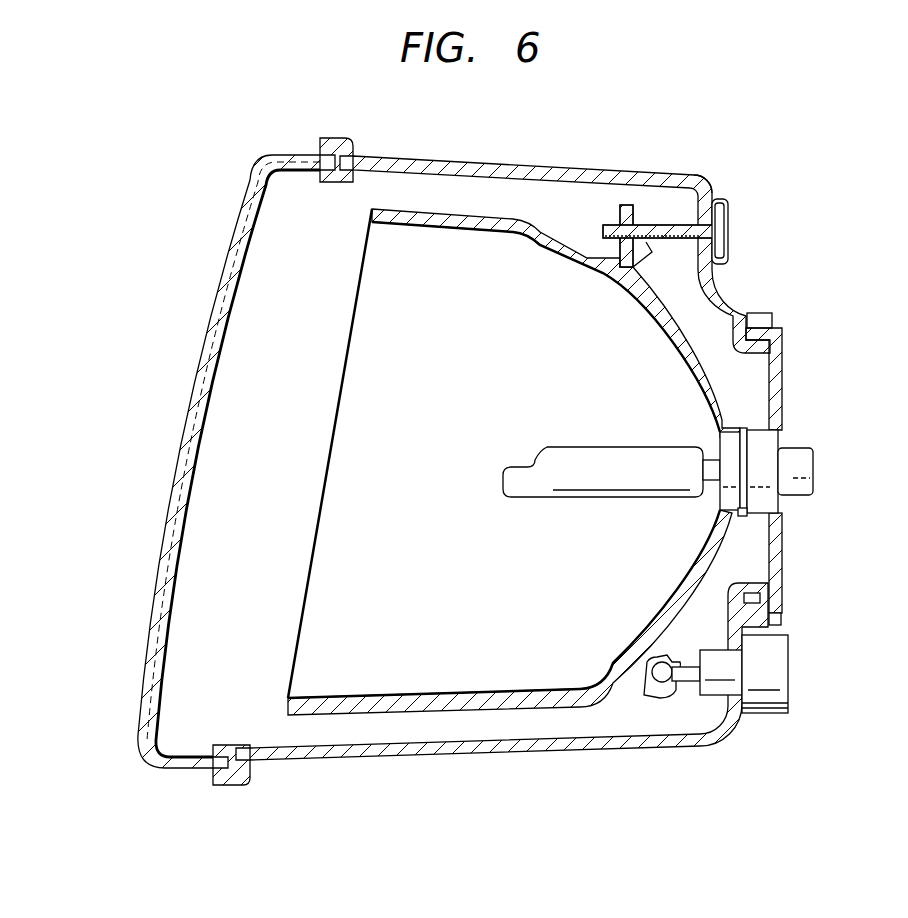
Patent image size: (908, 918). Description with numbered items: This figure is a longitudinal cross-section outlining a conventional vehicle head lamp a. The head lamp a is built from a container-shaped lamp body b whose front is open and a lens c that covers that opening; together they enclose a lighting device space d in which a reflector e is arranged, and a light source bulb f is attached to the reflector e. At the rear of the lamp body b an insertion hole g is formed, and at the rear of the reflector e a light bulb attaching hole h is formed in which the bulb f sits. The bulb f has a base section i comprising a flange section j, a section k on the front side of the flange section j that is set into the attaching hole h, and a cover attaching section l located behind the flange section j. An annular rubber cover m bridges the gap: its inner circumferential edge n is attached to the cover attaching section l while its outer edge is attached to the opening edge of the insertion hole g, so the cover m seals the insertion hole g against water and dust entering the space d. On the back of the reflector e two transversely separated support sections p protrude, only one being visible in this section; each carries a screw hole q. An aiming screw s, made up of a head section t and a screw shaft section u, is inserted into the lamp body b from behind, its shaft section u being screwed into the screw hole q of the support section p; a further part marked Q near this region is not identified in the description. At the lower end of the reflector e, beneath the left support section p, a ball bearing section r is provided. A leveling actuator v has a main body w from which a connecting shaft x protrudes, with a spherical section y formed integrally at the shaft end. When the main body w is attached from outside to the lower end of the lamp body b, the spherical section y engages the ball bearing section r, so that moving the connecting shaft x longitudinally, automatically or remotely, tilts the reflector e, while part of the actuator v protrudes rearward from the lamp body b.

The head lamp a is at (706, 139).
The lamp body b is at (535, 163).
The lens c is at (195, 375).
The lighting device space d is at (271, 446).
The reflector e is at (510, 706).
The light source bulb f is at (598, 482).
The insertion hole g is at (783, 367).
The light bulb attaching hole h is at (752, 441).
The base section i is at (773, 480).
The flange section j is at (745, 511).
The section to be attached to the reflector k is at (724, 492).
The cover attaching section l is at (788, 468).
The rubber cover m is at (783, 393).
The inner circumferential edge n is at (727, 410).
The support section p is at (655, 224).
The screw hole q is at (646, 246).
The engagement clip Q is at (752, 310).
The ball bearing section r is at (663, 696).
The aiming screw s is at (715, 193).
The head section t is at (729, 230).
The screw shaft section u is at (608, 222).
The leveling actuator v is at (784, 663).
The main body w is at (764, 709).
The connecting shaft x is at (691, 682).
The spherical section y is at (650, 684).